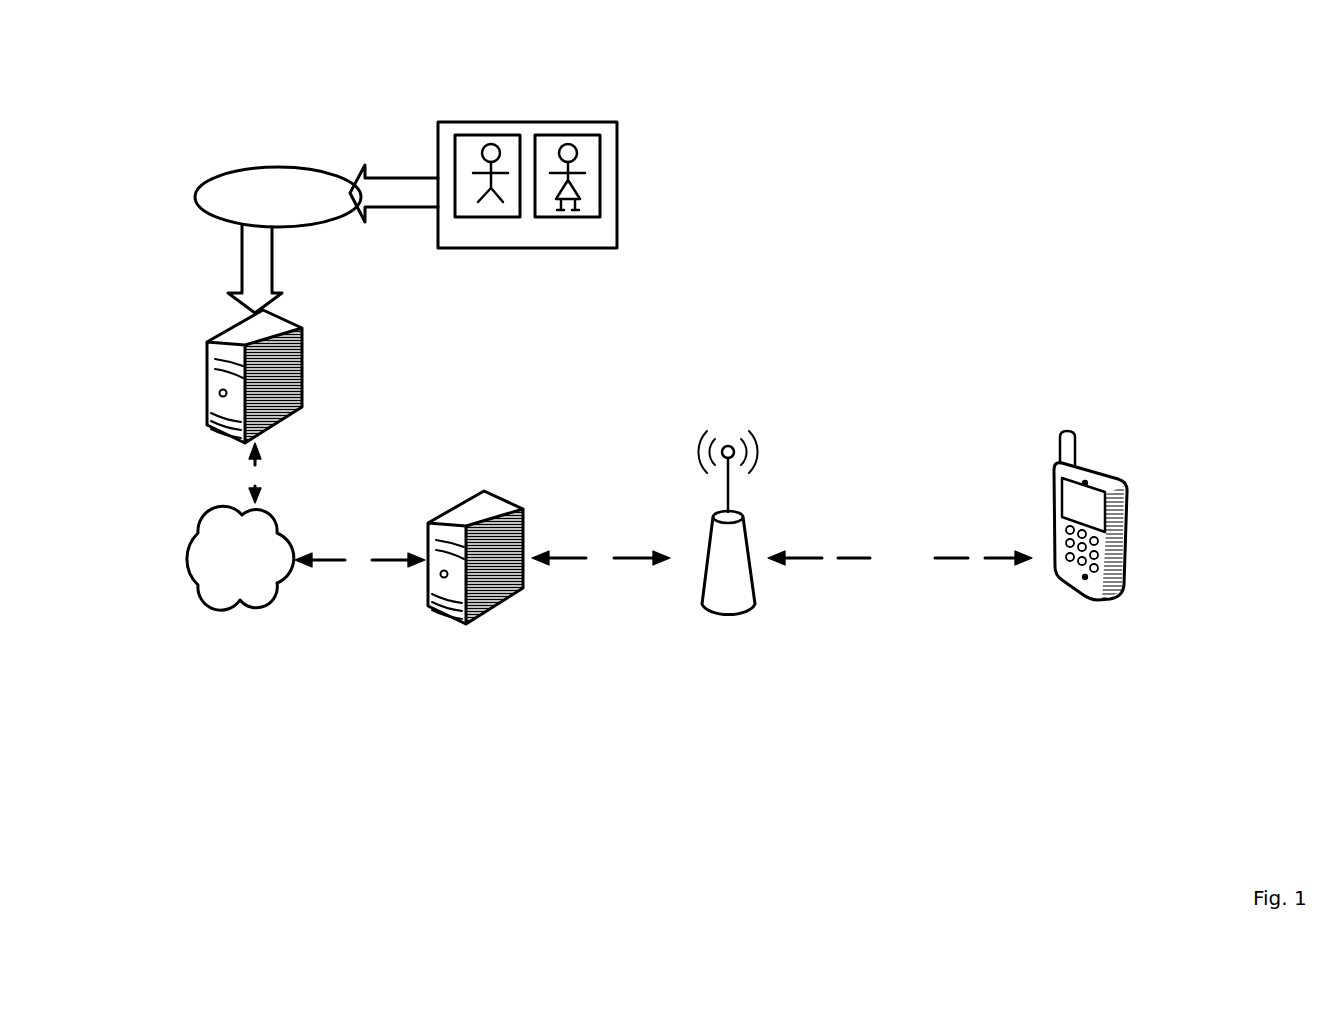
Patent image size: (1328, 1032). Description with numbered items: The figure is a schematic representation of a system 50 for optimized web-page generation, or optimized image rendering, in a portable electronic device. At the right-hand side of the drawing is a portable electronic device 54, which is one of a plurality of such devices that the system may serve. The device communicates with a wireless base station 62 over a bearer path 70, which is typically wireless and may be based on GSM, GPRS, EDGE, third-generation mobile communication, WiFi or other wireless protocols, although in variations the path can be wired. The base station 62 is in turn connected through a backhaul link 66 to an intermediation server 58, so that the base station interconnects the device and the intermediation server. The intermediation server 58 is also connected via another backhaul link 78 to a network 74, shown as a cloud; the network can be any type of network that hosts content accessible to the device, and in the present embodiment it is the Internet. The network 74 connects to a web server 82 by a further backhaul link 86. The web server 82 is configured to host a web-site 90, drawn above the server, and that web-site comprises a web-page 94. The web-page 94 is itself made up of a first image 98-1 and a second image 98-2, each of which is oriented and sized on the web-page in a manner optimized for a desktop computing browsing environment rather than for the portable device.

The system 50 is at (188, 820).
The portable electronic device 54 is at (1140, 553).
The intermediation server 58 is at (477, 623).
The wireless base station 62 is at (732, 623).
The backhaul link 66 is at (612, 568).
The bearer path 70 is at (914, 567).
The network 74 is at (252, 570).
The backhaul link 78 is at (371, 570).
The web server 82 is at (313, 367).
The backhaul link 86 is at (267, 485).
The web-site 90 is at (272, 167).
The web-page 94 is at (617, 183).
The first image 98-1 is at (472, 136).
The second image 98-2 is at (574, 136).